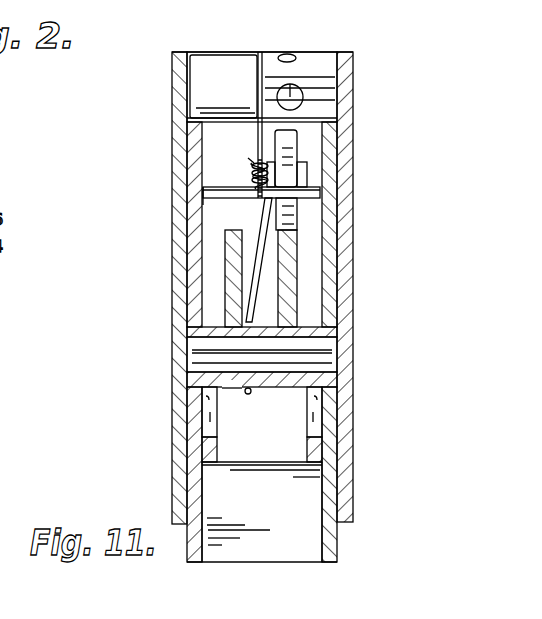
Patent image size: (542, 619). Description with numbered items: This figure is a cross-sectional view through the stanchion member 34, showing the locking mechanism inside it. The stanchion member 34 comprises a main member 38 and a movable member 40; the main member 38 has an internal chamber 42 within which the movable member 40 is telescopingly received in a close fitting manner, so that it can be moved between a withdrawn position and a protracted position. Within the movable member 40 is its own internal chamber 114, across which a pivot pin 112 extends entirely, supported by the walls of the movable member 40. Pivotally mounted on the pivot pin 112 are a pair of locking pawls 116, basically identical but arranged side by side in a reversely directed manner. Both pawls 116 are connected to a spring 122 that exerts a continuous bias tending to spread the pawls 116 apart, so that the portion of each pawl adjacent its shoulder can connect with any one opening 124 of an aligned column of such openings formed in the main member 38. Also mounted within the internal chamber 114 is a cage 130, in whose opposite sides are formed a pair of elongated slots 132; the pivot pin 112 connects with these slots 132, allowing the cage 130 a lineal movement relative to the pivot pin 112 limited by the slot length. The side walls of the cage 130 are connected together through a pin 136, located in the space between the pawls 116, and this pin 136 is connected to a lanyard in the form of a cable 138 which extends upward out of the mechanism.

The stanchion member 34 is at (358, 176).
The main member 38 is at (330, 480).
The movable member 40 is at (342, 563).
The internal chamber 42 is at (344, 92).
The pivot pin 112 is at (336, 350).
The internal chamber 114 is at (312, 522).
The locking pawls 116 is at (297, 270).
The spring 122 is at (258, 233).
The opening 124 is at (292, 84).
The cage 130 is at (310, 294).
The elongated slots 132 is at (208, 395).
The pin 136 is at (248, 186).
The cable 138 is at (258, 52).